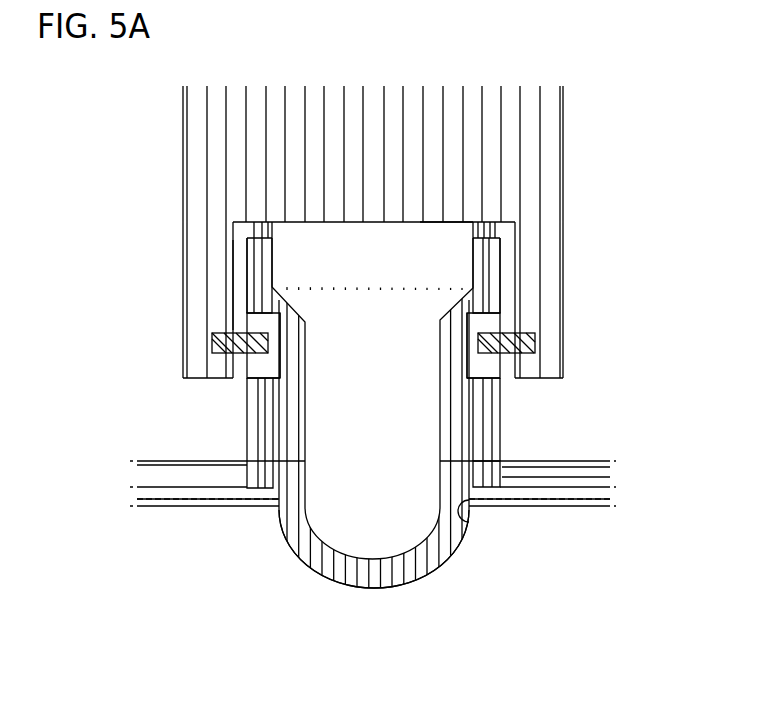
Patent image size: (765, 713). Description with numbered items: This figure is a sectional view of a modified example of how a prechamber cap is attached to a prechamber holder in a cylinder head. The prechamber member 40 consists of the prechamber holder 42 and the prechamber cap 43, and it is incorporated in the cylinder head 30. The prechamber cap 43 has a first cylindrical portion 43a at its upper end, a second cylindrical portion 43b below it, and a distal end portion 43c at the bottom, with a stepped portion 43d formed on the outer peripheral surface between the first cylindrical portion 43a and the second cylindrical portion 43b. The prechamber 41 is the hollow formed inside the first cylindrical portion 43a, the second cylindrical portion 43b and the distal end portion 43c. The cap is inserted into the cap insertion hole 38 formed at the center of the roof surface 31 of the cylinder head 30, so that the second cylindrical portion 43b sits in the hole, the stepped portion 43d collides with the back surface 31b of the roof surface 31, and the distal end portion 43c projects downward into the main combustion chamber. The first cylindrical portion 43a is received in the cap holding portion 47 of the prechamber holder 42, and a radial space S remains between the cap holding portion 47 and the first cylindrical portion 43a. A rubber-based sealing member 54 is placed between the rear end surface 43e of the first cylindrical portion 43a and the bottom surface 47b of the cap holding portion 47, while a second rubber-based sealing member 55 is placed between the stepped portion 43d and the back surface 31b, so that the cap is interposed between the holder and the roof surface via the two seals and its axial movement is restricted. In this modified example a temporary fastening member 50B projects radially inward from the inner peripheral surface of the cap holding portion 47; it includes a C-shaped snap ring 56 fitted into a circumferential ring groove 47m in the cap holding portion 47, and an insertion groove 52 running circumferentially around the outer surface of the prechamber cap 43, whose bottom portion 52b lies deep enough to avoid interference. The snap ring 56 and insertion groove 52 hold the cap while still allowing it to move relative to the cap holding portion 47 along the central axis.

The cylinder head 30 is at (593, 514).
The roof surface 31 is at (335, 508).
The back surface 31b is at (153, 461).
The cap insertion hole 38 is at (472, 525).
The prechamber member 40 is at (397, 369).
The prechamber 41 is at (415, 407).
The prechamber holder 42 is at (563, 165).
The prechamber cap 43 is at (374, 410).
The first cylindrical portion 43a is at (502, 302).
The second cylindrical portion 43b is at (273, 498).
The distal end portion 43c is at (378, 588).
The stepped portion 43d is at (502, 477).
The rear end surface 43e is at (252, 237).
The cap holding portion 47 is at (246, 249).
The bottom surface 47b is at (435, 224).
The ring groove 47m is at (218, 342).
The temporary fastening member 50B is at (278, 378).
The insertion groove 52 is at (258, 358).
The bottom portion 52b is at (268, 368).
The sealing member 54 is at (263, 228).
The sealing member 55 is at (245, 480).
The snap ring 56 is at (252, 376).
The space S is at (253, 303).